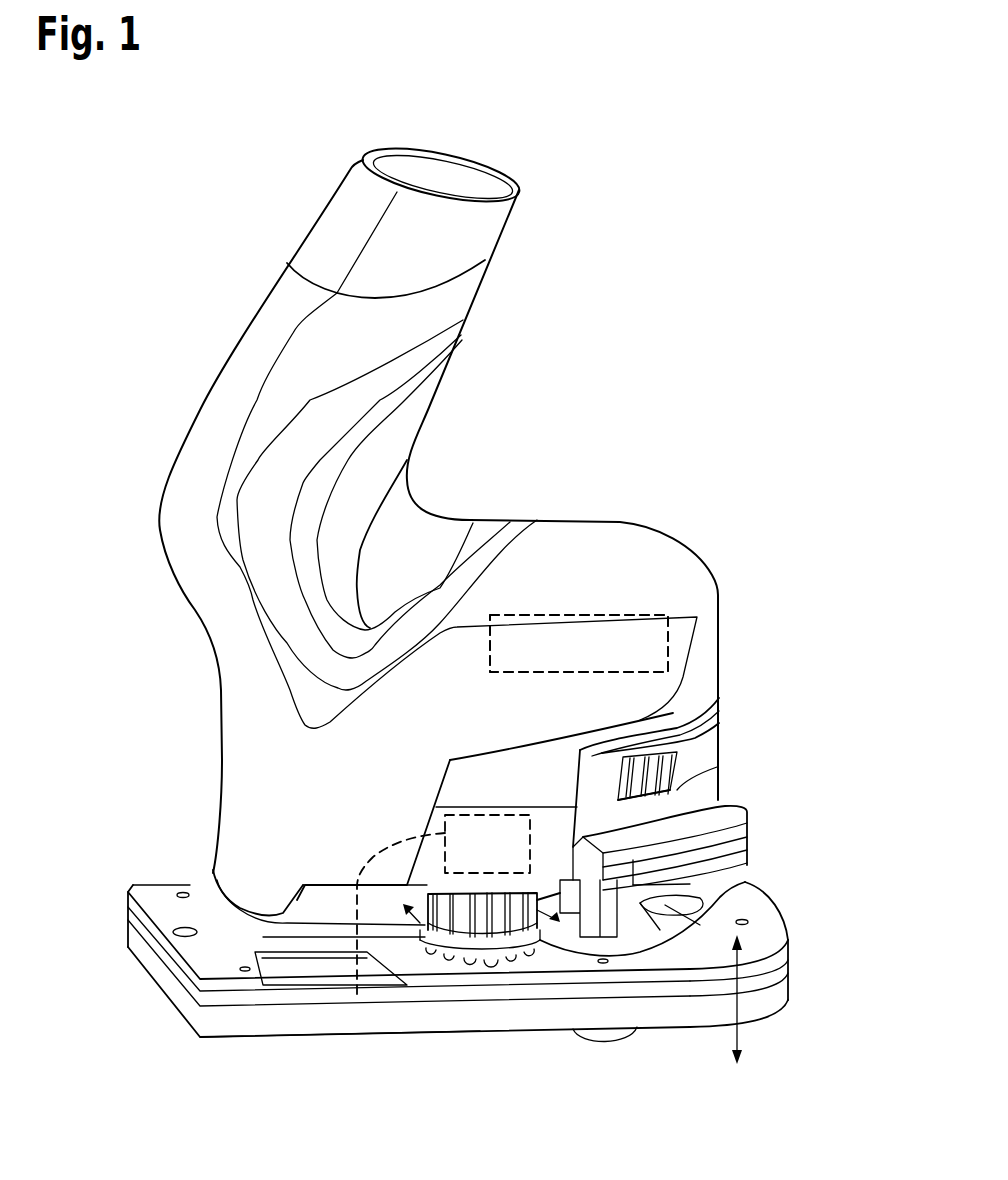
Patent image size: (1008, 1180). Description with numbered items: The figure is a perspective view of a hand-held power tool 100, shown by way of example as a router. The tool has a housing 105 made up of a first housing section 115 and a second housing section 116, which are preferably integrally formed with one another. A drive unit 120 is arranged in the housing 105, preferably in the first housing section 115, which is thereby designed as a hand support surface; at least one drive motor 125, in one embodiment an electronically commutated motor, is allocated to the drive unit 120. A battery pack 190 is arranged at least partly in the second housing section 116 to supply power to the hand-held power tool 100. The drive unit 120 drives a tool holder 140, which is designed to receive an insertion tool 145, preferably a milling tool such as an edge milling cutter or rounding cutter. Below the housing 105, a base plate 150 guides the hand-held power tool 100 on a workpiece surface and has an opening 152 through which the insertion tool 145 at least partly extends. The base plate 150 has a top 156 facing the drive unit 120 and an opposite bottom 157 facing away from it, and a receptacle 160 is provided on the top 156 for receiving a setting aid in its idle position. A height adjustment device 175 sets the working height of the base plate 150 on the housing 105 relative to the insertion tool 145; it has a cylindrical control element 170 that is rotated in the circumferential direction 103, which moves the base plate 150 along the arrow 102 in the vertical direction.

The hand-held power tool 100 is at (632, 150).
The battery pack 190 is at (458, 178).
The housing 105 is at (443, 303).
The second housing section 116 is at (423, 376).
The first housing section 115 is at (623, 560).
The drive unit 120 is at (600, 615).
The drive motor 125 is at (579, 643).
The opening 152 is at (705, 915).
The base plate 150 is at (760, 923).
The arrow 102 is at (757, 1000).
The tool holder 140 is at (690, 1053).
The insertion tool 145 is at (607, 1042).
The bottom 157 is at (225, 1040).
The top 156 is at (220, 960).
The receptacle 160 is at (178, 933).
The control element 170 is at (444, 937).
The circumferential direction 103 is at (462, 937).
The height adjustment device 175 is at (357, 1000).